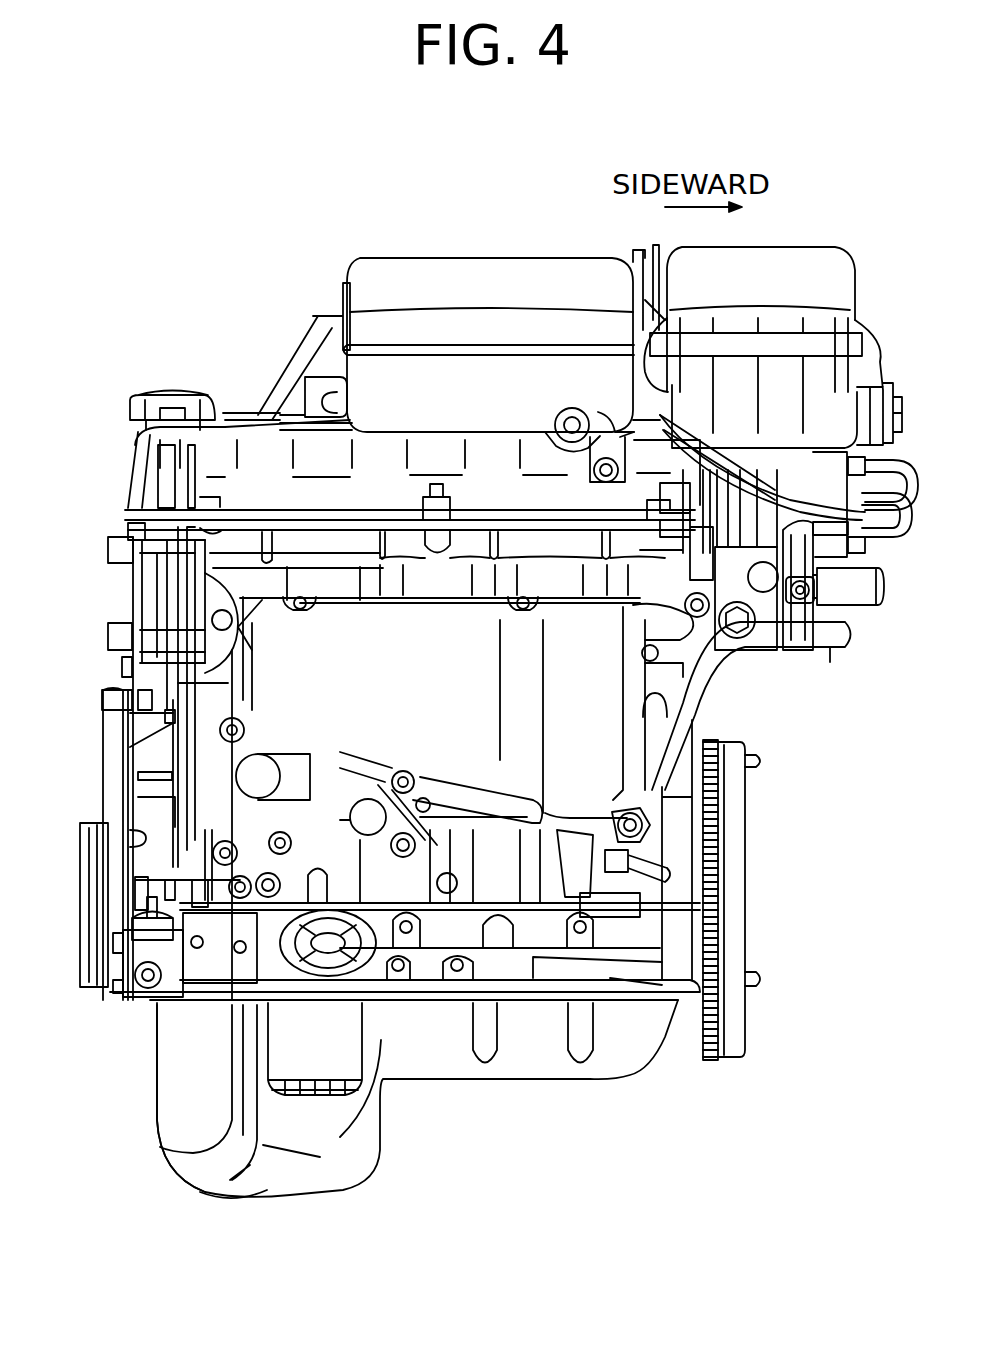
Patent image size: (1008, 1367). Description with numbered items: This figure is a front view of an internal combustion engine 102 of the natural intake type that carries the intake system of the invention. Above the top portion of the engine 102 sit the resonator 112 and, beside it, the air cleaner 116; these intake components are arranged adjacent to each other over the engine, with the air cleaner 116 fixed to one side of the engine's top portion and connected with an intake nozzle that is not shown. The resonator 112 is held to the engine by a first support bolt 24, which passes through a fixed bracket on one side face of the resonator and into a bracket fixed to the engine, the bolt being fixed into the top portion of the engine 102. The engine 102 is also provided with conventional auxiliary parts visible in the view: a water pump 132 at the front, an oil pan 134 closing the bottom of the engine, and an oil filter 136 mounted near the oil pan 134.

The engine 102 is at (765, 152).
The resonator 112 is at (418, 273).
The first support bolt 24 is at (572, 408).
The air cleaner 116 is at (808, 263).
The water pump 132 is at (210, 800).
The oil pan 134 is at (157, 1113).
The oil filter 136 is at (345, 1047).